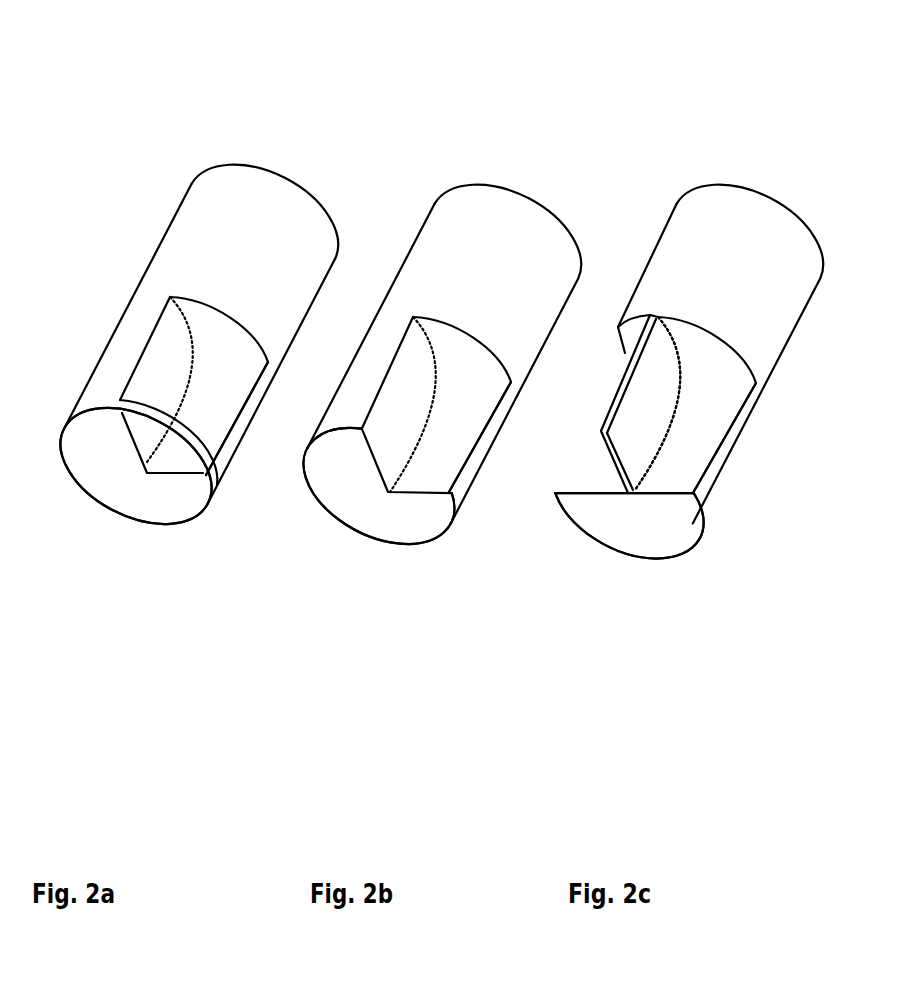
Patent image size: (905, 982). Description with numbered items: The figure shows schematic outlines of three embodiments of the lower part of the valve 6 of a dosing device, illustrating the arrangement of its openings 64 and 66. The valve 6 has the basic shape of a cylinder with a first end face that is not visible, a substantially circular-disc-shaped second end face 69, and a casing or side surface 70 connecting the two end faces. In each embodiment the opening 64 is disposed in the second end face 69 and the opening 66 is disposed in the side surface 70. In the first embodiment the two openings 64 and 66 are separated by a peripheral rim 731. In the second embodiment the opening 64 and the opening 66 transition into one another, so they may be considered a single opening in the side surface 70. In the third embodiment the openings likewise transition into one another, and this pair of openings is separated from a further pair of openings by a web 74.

In FIG. 2a, the valve 6 is at (185, 412).
In FIG. 2b, the valve 6 is at (442, 416).
In FIG. 2c, the valve 6 is at (665, 410).
In FIG. 2a, the side surface 70 is at (239, 246).
In FIG. 2b, the side surface 70 is at (497, 248).
In FIG. 2c, the side surface 70 is at (748, 258).
In FIG. 2a, the opening 64 is at (168, 464).
In FIG. 2b, the opening 64 is at (408, 487).
In FIG. 2c, the opening 64 is at (649, 487).
In FIG. 2a, the opening 66 is at (209, 418).
In FIG. 2b, the opening 66 is at (459, 430).
In FIG. 2c, the opening 66 is at (700, 423).
In FIG. 2a, the second end face 69 is at (92, 486).
In FIG. 2b, the second end face 69 is at (333, 505).
In FIG. 2c, the second end face 69 is at (592, 518).
In FIG. 2a, the peripheral rim 731 is at (143, 410).
In FIG. 2c, the web 74 is at (660, 382).